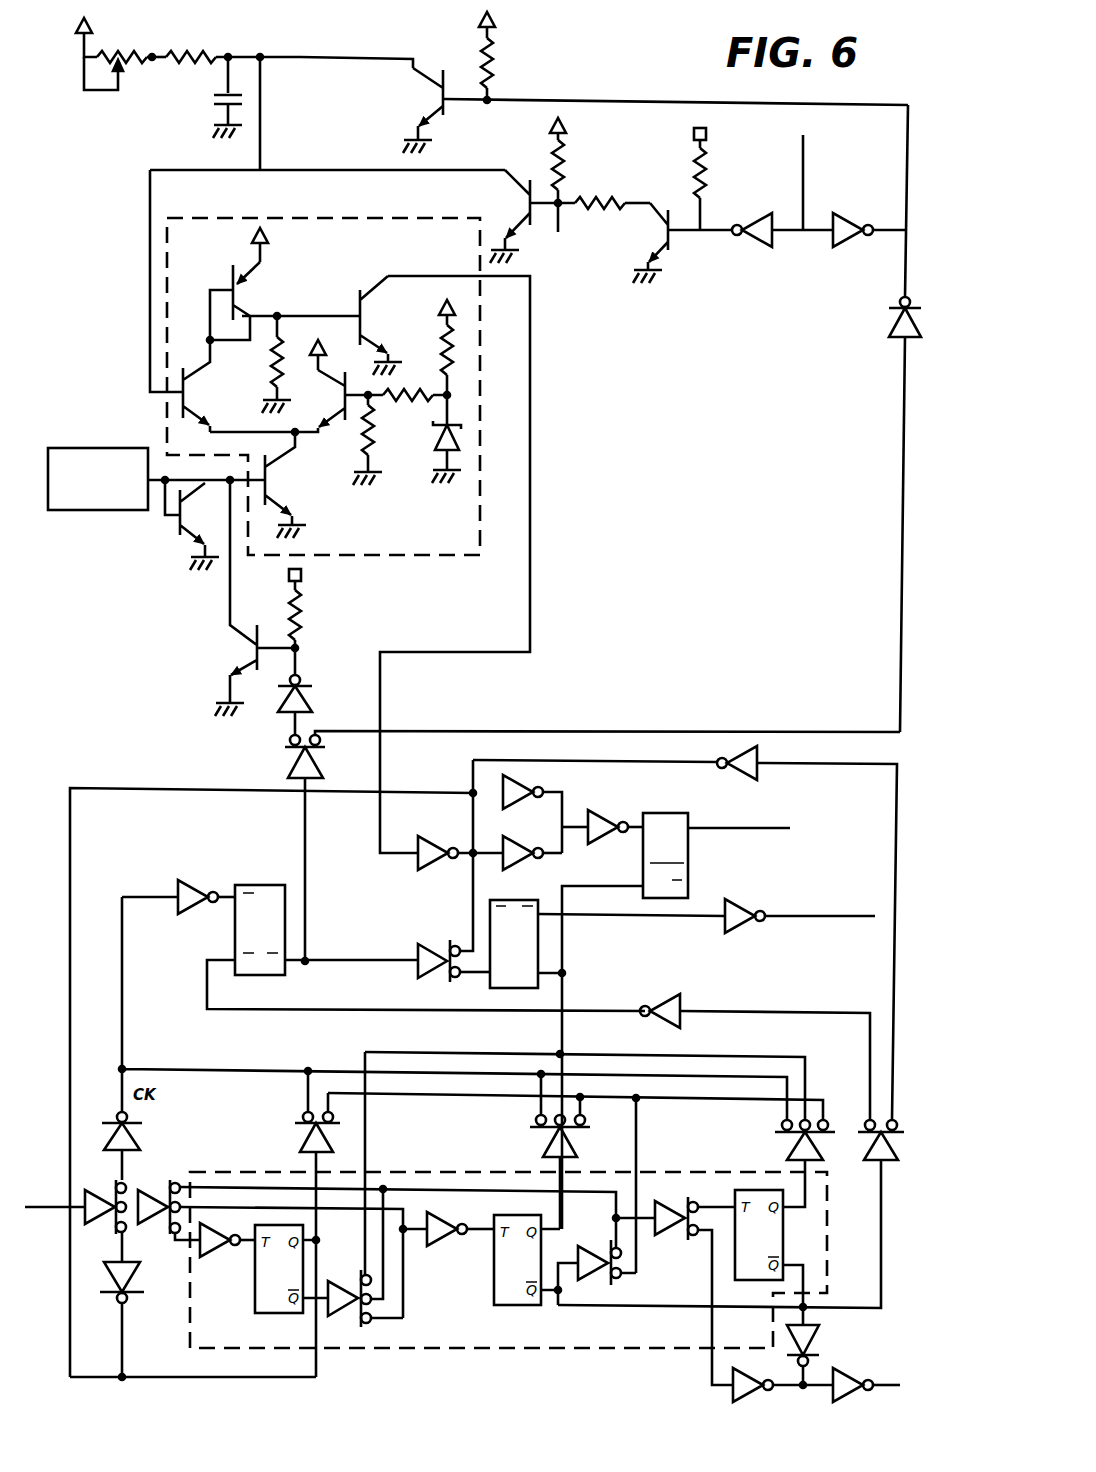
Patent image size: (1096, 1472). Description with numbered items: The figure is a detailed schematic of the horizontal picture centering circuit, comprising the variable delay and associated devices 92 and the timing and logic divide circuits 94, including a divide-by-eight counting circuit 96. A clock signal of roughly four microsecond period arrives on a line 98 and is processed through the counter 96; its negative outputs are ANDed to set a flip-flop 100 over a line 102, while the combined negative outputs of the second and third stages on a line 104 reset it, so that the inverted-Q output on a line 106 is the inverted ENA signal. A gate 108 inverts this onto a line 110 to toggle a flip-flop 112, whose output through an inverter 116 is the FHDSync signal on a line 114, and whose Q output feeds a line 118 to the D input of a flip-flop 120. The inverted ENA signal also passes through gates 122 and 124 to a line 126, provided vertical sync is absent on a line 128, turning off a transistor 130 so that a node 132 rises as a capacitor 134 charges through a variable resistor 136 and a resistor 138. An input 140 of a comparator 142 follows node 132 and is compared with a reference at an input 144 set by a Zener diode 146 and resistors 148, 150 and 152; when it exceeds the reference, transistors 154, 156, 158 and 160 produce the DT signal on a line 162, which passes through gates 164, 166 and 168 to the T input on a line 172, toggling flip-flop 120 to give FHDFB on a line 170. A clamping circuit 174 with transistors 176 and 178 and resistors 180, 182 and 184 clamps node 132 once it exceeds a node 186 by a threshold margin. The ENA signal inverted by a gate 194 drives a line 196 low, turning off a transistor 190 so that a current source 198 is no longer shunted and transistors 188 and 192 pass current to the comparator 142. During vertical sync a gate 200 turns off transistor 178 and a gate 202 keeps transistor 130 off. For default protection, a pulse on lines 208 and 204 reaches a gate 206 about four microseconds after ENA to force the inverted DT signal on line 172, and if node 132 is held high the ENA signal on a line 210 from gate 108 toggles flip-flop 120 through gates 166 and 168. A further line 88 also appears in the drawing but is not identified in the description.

The clock line 88 is at (120, 1069).
The variable delay and associated devices 92 is at (124, 208).
The timing and logic divide circuits 94 is at (120, 772).
The divide-by-eight counting circuit 96 is at (503, 1353).
The line 98 is at (50, 1210).
The flip-flop 100 is at (281, 885).
The line 102 is at (122, 897).
The line 104 is at (207, 1010).
The line 106 is at (308, 961).
The gate 108 is at (437, 927).
The line 110 is at (462, 977).
The flip-flop 112 is at (503, 905).
The line 114 is at (795, 918).
The inverter 116 is at (728, 900).
The line 118 is at (566, 886).
The flip-flop 120 is at (665, 855).
The gate 122 is at (290, 756).
The gate 124 is at (892, 318).
The line 126 is at (906, 180).
The line 128 is at (805, 172).
The transistor 130 is at (445, 103).
The node 132 is at (262, 56).
The capacitor 134 is at (212, 100).
The variable resistor 136 is at (117, 54).
The resistor 138 is at (197, 50).
The input 140 is at (148, 392).
The comparator 142 is at (322, 215).
The input 144 is at (351, 366).
The Zener diode 146 is at (447, 458).
The resistor 148 is at (447, 355).
The resistor 150 is at (425, 408).
The resistor 152 is at (372, 430).
The transistor 154 is at (190, 392).
The transistor 156 is at (289, 402).
The transistor 158 is at (243, 290).
The transistor 160 is at (358, 305).
The line 162 is at (531, 352).
The gate 164 is at (440, 815).
The gate 166 is at (522, 842).
The gate 168 is at (598, 810).
The line 170 is at (742, 827).
The line 172 is at (640, 820).
The clamping circuit 174 is at (634, 133).
The transistor 176 is at (525, 205).
The transistor 178 is at (672, 240).
The resistor 180 is at (562, 158).
The resistor 182 is at (604, 172).
The resistor 184 is at (705, 178).
The node 186 is at (553, 232).
The transistor 188 is at (280, 470).
The transistor 190 is at (252, 648).
The transistor 192 is at (178, 528).
The gate 194 is at (312, 700).
The line 196 is at (299, 655).
The current source 198 is at (96, 511).
The gate 200 is at (746, 243).
The gate 202 is at (850, 240).
The line 204 is at (70, 825).
The gate 206 is at (516, 782).
The line 208 is at (896, 960).
The line 210 is at (472, 872).